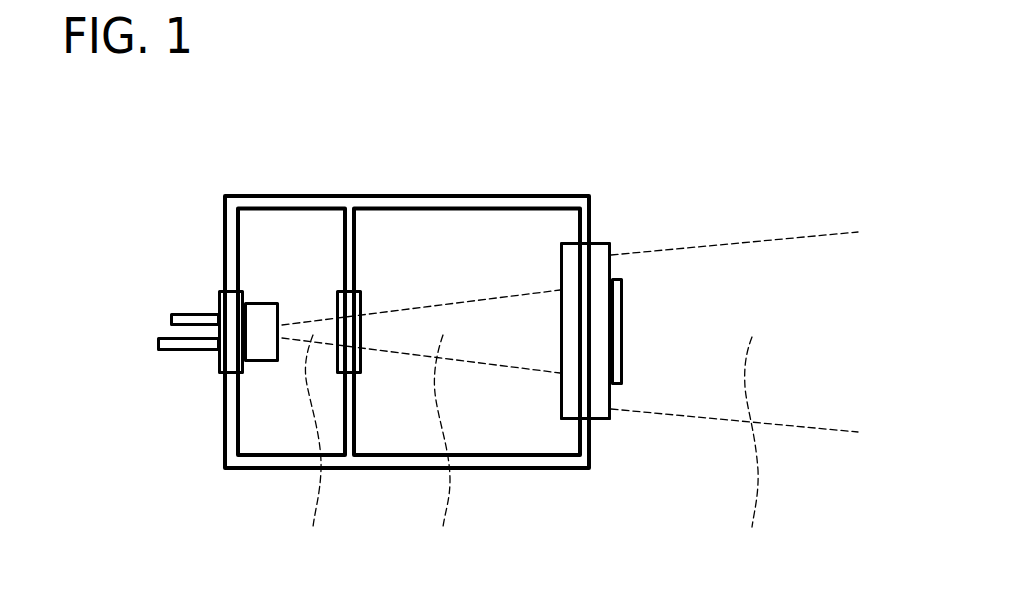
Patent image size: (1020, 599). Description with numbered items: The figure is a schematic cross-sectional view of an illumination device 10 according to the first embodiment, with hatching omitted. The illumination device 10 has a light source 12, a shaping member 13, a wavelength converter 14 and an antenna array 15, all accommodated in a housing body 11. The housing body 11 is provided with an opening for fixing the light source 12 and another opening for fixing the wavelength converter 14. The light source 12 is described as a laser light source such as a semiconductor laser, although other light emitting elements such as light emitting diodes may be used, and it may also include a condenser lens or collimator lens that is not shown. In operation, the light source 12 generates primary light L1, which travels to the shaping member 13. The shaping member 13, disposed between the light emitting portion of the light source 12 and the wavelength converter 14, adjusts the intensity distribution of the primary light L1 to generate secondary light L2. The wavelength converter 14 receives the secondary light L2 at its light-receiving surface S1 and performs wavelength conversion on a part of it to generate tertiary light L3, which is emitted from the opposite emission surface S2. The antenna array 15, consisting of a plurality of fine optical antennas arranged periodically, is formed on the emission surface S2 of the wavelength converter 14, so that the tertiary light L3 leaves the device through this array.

The illumination device 10 is at (172, 162).
The housing body 11 is at (245, 197).
The light source 12 is at (254, 315).
The shaping member 13 is at (357, 305).
The wavelength converter 14 is at (573, 255).
The antenna array 15 is at (618, 282).
The primary light L1 is at (315, 448).
The secondary light L2 is at (445, 448).
The tertiary light L3 is at (753, 449).
The light-receiving surface S1 is at (561, 398).
The emission surface S2 is at (611, 398).